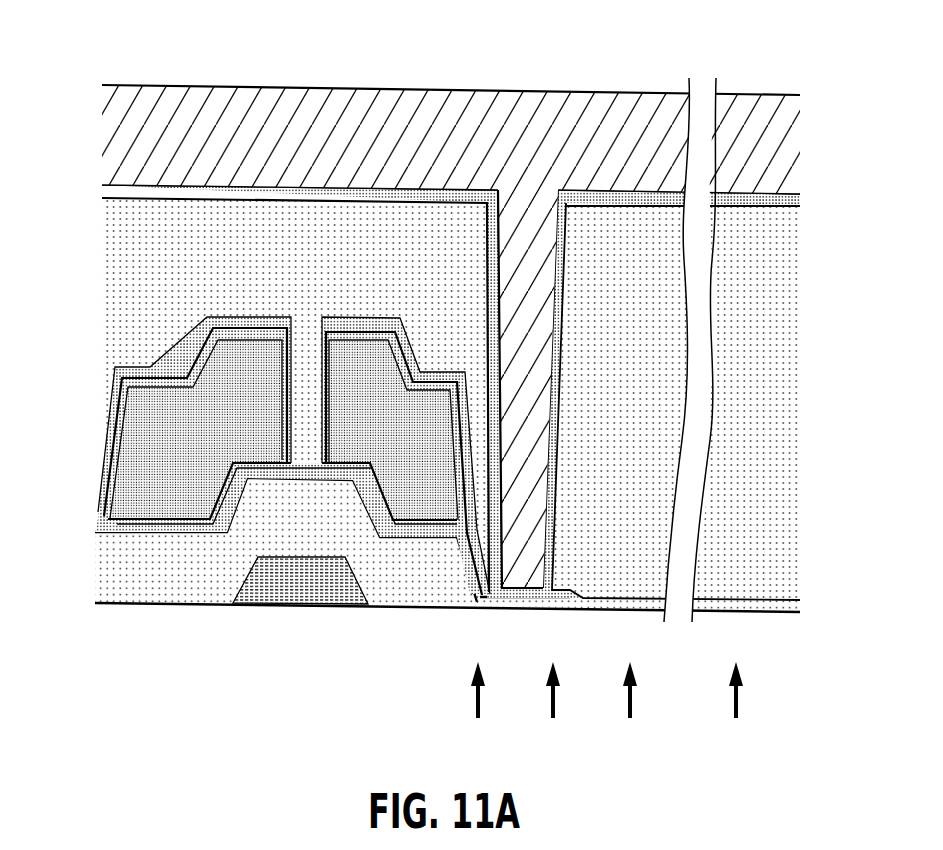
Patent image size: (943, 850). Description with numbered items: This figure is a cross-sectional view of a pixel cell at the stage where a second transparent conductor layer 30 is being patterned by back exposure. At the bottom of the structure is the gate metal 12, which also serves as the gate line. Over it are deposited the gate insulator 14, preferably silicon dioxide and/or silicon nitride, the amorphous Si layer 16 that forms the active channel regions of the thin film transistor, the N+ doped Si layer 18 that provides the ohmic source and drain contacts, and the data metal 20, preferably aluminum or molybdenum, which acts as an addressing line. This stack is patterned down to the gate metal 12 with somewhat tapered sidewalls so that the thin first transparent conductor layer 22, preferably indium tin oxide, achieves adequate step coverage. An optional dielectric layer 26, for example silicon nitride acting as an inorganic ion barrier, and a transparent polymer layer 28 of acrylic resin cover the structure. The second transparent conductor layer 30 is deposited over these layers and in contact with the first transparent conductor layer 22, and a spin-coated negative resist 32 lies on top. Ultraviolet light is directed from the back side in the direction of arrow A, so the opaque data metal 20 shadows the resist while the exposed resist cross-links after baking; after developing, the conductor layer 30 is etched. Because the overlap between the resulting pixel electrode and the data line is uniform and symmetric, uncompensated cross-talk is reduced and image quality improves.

The gate metal 12 is at (313, 610).
The gate insulator 14 is at (165, 605).
The amorphous Si layer 16 is at (105, 535).
The N+ doped Si layer 18 is at (122, 528).
The data metal 20 is at (112, 492).
The first transparent conductor layer 22 is at (112, 445).
The dielectric layer 26 is at (107, 400).
The transparent polymer layer 28 is at (108, 335).
The second transparent conductor layer 30 is at (143, 185).
The negative resist 32 is at (455, 122).
The arrow A is at (737, 700).